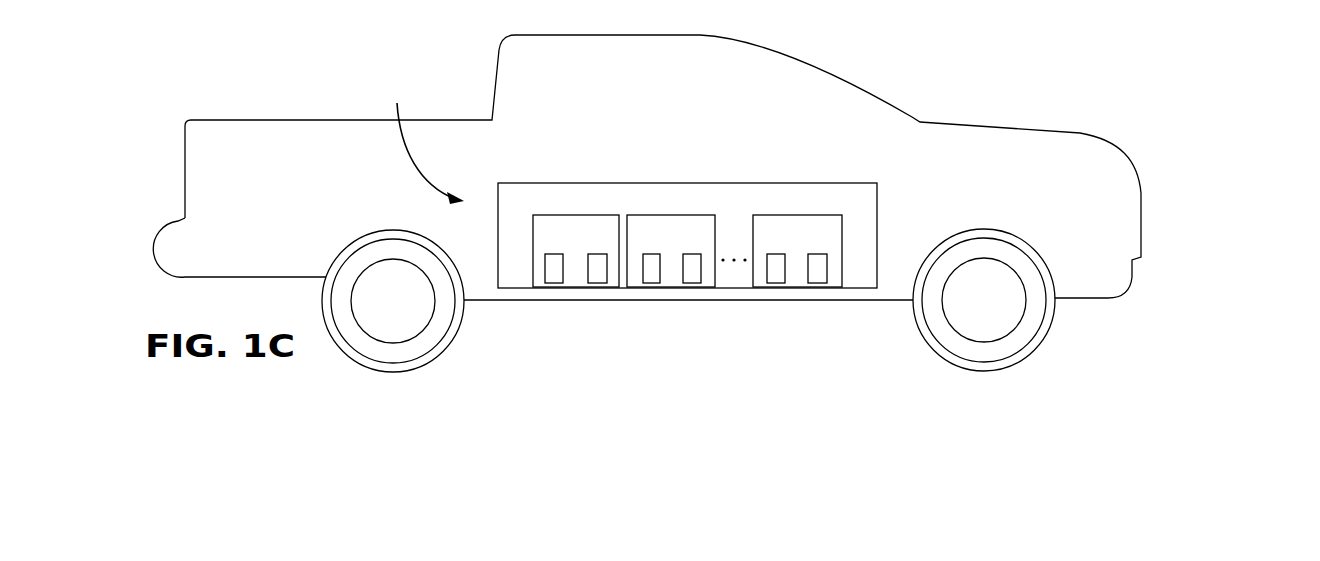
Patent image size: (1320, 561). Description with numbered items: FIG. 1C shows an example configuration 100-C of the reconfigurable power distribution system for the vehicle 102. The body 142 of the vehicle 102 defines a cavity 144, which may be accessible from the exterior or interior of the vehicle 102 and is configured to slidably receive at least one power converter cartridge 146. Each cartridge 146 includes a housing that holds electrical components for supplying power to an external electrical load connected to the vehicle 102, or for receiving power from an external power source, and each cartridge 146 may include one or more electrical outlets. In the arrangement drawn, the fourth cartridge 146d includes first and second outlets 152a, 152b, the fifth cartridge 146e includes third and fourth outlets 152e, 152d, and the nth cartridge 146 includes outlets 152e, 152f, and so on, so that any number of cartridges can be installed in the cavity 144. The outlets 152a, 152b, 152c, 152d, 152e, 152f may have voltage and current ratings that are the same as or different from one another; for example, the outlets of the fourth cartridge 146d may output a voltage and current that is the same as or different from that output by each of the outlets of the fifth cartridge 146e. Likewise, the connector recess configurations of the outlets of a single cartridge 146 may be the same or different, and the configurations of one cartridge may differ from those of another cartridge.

The example configuration of the reconfigurable power distribution system 100-C is at (1232, 100).
The vehicle 102 is at (497, 57).
The body 142 is at (422, 141).
The cavity 144 is at (698, 183).
The power converter cartridge 146 is at (807, 215).
The fourth cartridge 146d is at (572, 215).
The fifth cartridge 146e is at (638, 215).
The first outlet 152a is at (553, 277).
The second outlet 152b is at (597, 277).
The electrical outlet 152c is at (650, 277).
The fourth outlet 152d is at (692, 277).
The third outlet 152e is at (775, 277).
The electrical outlet 152f is at (818, 277).